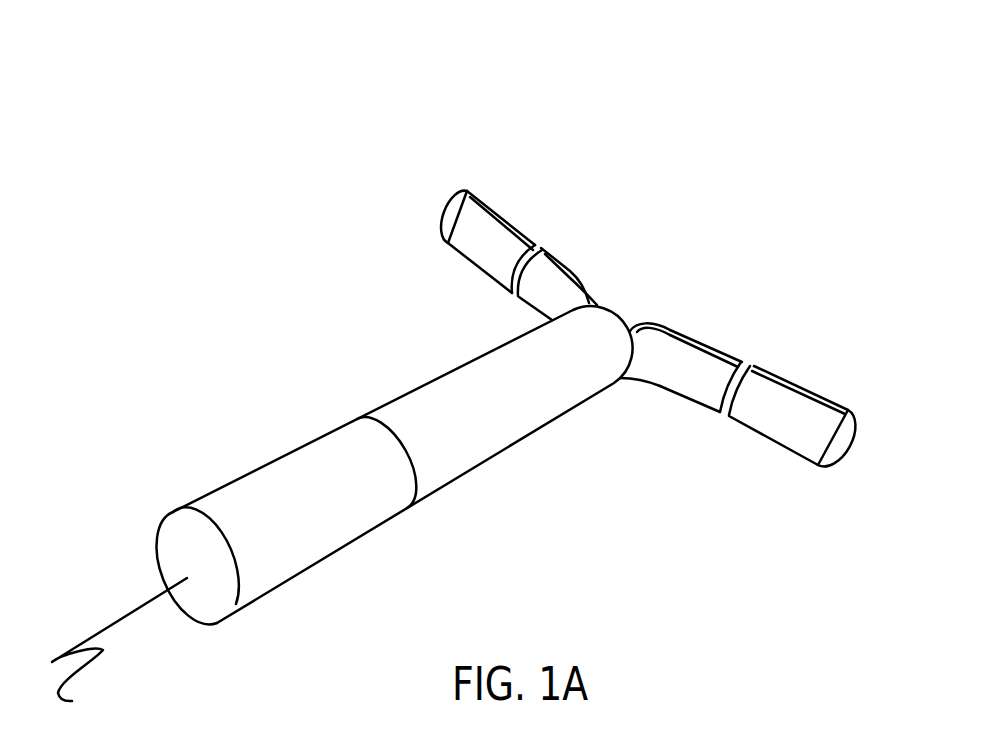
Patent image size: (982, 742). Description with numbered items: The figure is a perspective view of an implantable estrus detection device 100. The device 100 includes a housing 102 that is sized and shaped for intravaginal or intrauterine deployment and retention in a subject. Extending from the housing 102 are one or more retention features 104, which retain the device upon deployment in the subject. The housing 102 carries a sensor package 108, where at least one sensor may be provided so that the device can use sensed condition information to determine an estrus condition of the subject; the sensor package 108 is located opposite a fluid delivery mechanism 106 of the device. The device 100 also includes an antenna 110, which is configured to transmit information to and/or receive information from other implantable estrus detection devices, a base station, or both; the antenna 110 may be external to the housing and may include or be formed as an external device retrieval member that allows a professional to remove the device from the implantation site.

The device 100 is at (453, 363).
The housing 102 is at (593, 395).
The retention features 104 is at (523, 234).
The fluid delivery mechanism 106 is at (612, 306).
The sensor package 108 is at (368, 532).
The antenna 110 is at (149, 602).